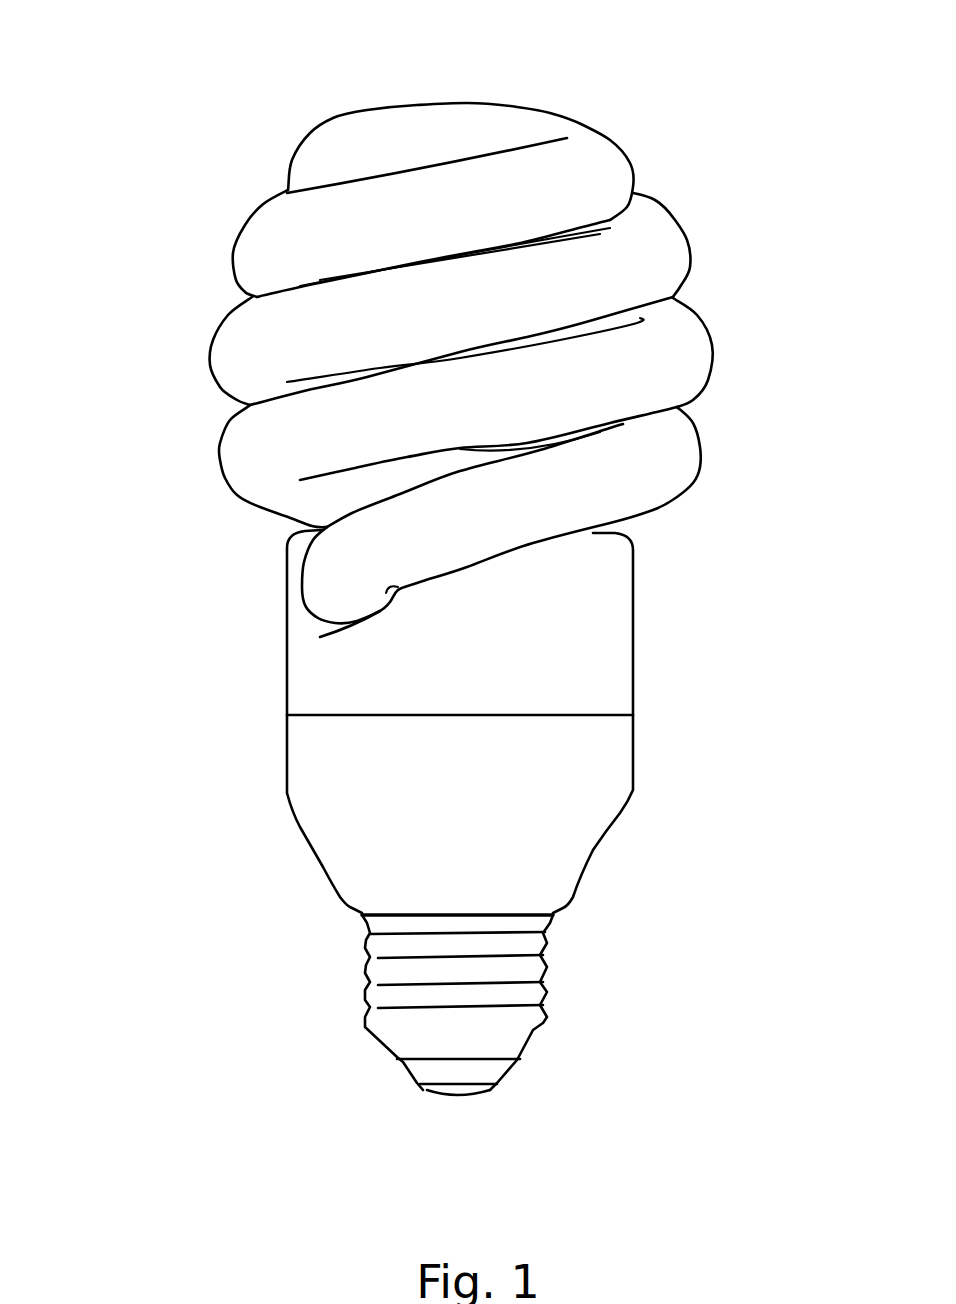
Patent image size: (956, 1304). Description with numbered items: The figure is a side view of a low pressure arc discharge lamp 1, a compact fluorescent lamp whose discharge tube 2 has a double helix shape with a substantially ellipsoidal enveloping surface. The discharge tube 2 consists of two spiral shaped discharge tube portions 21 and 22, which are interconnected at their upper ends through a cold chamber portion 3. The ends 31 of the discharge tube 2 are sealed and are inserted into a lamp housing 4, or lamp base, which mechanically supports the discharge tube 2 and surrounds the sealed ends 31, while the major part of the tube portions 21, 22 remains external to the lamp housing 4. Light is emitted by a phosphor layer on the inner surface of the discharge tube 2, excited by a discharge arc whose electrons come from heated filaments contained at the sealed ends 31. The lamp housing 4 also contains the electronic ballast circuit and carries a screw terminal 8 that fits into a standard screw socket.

The low pressure arc discharge lamp 1 is at (186, 836).
The discharge tube 2 is at (460, 318).
The cold chamber portion 3 is at (428, 90).
The spiral shaped discharge tube portion 21 is at (640, 462).
The spiral shaped discharge tube portion 22 is at (287, 450).
The ends of the discharge tube 31 is at (352, 590).
The lamp housing 4 is at (573, 830).
The screw terminal 8 is at (490, 1033).